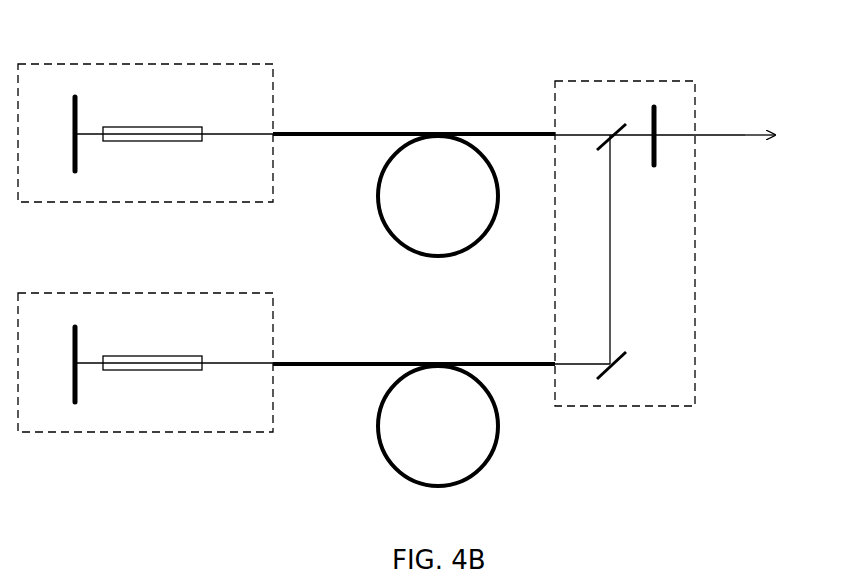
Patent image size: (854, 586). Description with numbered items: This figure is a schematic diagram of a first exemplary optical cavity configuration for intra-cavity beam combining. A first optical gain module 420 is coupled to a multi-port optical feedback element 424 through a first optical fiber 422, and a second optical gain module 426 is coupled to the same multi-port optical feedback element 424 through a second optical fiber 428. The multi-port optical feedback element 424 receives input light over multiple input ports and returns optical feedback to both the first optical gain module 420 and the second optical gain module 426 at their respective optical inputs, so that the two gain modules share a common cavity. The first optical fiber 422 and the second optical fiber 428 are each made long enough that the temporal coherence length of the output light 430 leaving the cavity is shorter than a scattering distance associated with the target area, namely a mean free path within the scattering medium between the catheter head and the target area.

The first optical gain module 420 is at (155, 64).
The first optical fiber 422 is at (353, 237).
The multi-port optical feedback element 424 is at (637, 81).
The second optical gain module 426 is at (153, 293).
The second optical fiber 428 is at (352, 468).
The output light 430 is at (747, 138).